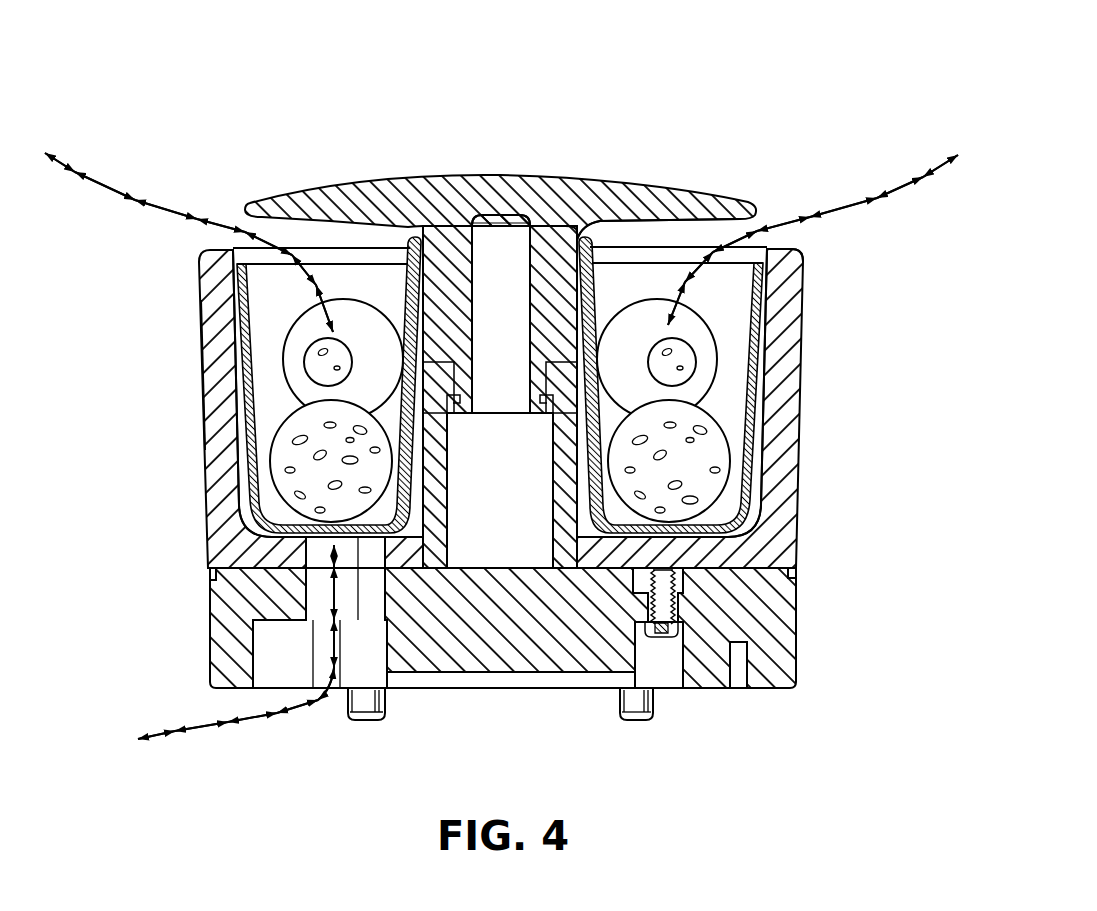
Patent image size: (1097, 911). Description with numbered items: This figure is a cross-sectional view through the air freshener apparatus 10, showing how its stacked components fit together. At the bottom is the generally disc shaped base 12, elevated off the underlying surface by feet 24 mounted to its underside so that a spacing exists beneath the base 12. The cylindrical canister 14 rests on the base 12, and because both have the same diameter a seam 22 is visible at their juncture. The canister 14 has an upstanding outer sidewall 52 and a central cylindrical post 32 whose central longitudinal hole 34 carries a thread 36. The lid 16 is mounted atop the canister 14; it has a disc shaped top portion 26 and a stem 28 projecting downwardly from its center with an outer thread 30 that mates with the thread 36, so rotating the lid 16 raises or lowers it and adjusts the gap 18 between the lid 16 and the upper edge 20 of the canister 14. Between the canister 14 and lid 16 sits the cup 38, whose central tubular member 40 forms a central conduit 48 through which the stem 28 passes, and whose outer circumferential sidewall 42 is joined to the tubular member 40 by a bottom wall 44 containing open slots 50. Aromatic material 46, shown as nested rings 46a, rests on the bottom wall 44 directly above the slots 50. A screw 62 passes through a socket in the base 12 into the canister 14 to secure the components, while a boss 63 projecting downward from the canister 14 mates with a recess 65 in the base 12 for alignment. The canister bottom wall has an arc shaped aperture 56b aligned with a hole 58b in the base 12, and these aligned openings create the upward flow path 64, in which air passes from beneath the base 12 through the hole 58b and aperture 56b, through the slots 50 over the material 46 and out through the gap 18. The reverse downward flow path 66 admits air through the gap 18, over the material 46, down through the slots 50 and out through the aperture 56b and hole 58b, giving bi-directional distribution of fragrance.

The air freshener apparatus 10 is at (770, 37).
The base 12 is at (806, 632).
The canister 14 is at (808, 402).
The lid 16 is at (749, 192).
The gap 18 is at (769, 220).
The upper edge 20 is at (792, 249).
The seam 22 is at (797, 570).
The feet 24 is at (368, 722).
The top portion 26 is at (500, 180).
The stem 28 is at (418, 300).
The outer thread 30 is at (452, 390).
The post 32 is at (625, 358).
The central longitudinal hole 34 is at (500, 462).
The thread 36 is at (545, 392).
The cup 38 is at (348, 262).
The tubular member 40 is at (598, 300).
The outer circumferential sidewall 42 is at (248, 394).
The bottom wall 44 is at (730, 522).
The aromatic material 46 is at (304, 312).
The ring 46a is at (304, 362).
The central conduit 48 is at (578, 300).
The slots 50 is at (262, 506).
The outer sidewall 52 is at (204, 428).
The aperture 56b is at (313, 553).
The hole 58b is at (313, 592).
The screw 62 is at (663, 637).
The boss 63 is at (633, 578).
The upward flow path 64 is at (143, 203).
The recess 65 is at (664, 572).
The downward flow path 66 is at (80, 176).